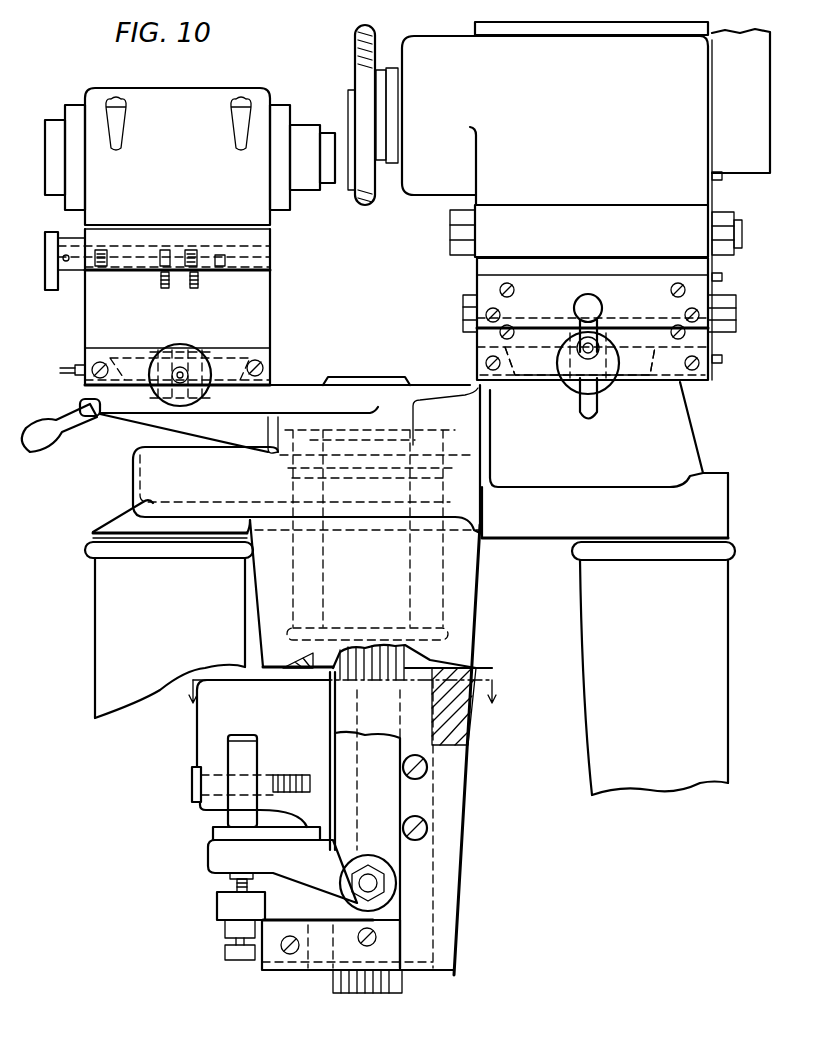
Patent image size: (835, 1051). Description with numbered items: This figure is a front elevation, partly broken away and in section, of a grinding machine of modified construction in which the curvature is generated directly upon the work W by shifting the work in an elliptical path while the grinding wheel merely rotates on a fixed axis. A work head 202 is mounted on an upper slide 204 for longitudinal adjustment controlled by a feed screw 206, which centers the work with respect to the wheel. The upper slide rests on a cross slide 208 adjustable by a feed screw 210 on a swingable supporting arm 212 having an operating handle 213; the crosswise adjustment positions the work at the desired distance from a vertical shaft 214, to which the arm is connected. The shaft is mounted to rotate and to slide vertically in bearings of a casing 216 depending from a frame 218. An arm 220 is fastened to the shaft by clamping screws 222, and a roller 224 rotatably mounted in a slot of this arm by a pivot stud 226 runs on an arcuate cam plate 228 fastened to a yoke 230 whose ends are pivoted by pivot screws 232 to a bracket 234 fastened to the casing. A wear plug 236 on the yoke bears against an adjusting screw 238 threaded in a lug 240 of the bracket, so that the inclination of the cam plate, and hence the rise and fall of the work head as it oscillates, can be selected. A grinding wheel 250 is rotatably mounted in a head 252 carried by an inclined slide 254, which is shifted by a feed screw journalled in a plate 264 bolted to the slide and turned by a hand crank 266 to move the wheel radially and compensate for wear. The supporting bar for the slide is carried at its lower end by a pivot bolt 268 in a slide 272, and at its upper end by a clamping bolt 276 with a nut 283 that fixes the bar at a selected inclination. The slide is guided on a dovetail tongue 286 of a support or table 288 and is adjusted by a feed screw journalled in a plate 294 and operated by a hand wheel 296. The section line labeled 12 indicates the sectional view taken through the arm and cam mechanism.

The work head 202 is at (197, 172).
The upper slide 204 is at (262, 260).
The feed screw 206 is at (47, 290).
The cross slide 208 is at (262, 338).
The feed screw 210 is at (177, 347).
The swingable supporting arm 212 is at (285, 413).
The operating handle 213 is at (47, 440).
The vertical shaft 214 is at (462, 655).
The casing 216 is at (468, 616).
The frame 218 is at (543, 516).
The arm 220 is at (308, 716).
The clamping screws 222 is at (455, 782).
The roller 224 is at (228, 812).
The pivot stud 226 is at (192, 780).
The arcuate cam plate 228 is at (215, 832).
The yoke 230 is at (210, 852).
The pivot screws 232 is at (398, 883).
The bracket 234 is at (342, 968).
The wear plug 236 is at (232, 878).
The adjusting screw 238 is at (232, 890).
The lug 240 is at (220, 905).
The grinding wheel 250 is at (358, 35).
The head 252 is at (587, 116).
The inclined slide 254 is at (620, 241).
The plate 264 is at (478, 275).
The hand crank 266 is at (592, 412).
The pivot bolt 268 is at (737, 311).
The slide 272 is at (712, 346).
The clamping bolt 276 is at (742, 232).
The nut 283 is at (726, 214).
The dovetail tongue 286 is at (480, 361).
The support or table 288 is at (562, 443).
The plate 294 is at (485, 343).
The hand wheel 296 is at (612, 390).
The work W is at (362, 182).
The section line 12- 12 is at (346, 700).